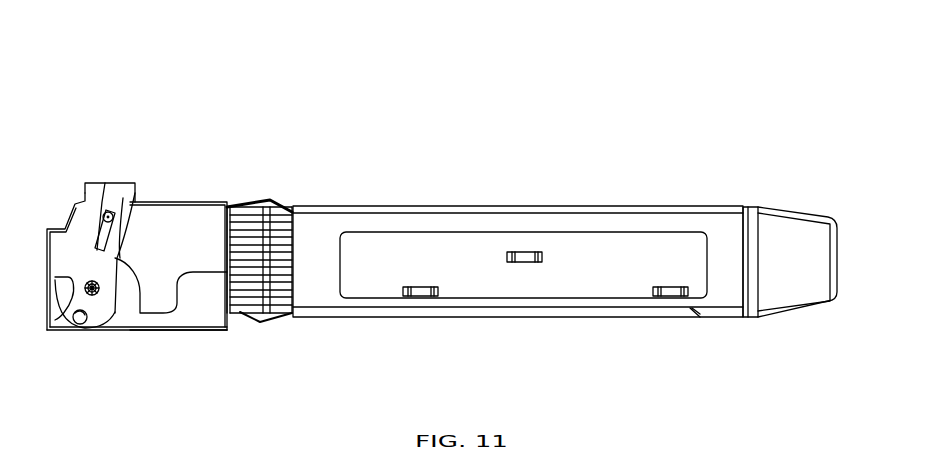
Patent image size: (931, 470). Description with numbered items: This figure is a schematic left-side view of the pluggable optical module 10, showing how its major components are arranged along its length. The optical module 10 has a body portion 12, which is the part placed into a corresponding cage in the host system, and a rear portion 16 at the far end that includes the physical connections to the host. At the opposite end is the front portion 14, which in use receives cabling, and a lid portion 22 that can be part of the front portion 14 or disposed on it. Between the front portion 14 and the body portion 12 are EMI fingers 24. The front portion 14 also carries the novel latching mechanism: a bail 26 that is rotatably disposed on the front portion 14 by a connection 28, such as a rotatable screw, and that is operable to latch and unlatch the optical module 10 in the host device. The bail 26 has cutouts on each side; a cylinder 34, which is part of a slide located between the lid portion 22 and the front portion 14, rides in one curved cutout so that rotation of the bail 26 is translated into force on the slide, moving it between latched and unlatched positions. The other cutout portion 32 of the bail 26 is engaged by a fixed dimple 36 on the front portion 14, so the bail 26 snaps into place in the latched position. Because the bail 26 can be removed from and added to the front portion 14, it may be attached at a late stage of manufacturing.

The optical module 10 is at (440, 45).
The body portion 12 is at (572, 206).
The front portion 14 is at (197, 202).
The rear portion 16 is at (812, 215).
The lid portion 22 is at (183, 329).
The EMI fingers 24 is at (268, 208).
The bail 26 is at (110, 215).
The connection 28 is at (98, 292).
The cutout portion 32 is at (63, 277).
The cylinder 34 is at (80, 320).
The fixed dimple 36 is at (130, 202).